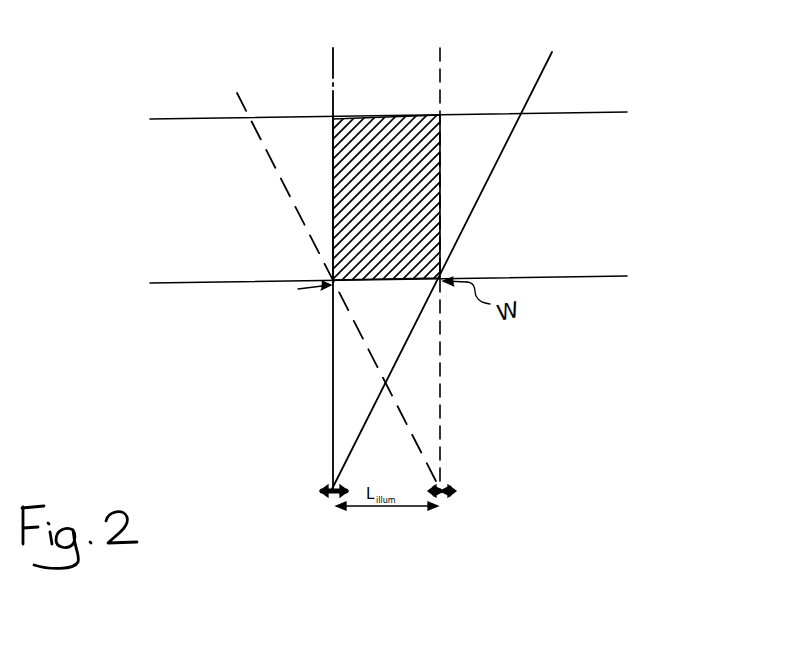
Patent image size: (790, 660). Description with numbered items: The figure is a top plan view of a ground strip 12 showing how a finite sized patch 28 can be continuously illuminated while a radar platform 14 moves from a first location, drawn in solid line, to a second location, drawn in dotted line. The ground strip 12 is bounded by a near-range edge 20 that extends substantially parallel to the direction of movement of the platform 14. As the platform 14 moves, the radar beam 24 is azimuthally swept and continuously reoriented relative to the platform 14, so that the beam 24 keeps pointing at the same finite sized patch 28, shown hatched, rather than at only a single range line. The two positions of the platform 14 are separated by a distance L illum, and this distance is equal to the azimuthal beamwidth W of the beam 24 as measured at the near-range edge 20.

The ground strip 12 is at (577, 128).
The radar platform 14 is at (333, 500).
The near-range edge 20 is at (163, 282).
The beam 24 is at (332, 410).
The finite sized patch 28 is at (385, 131).